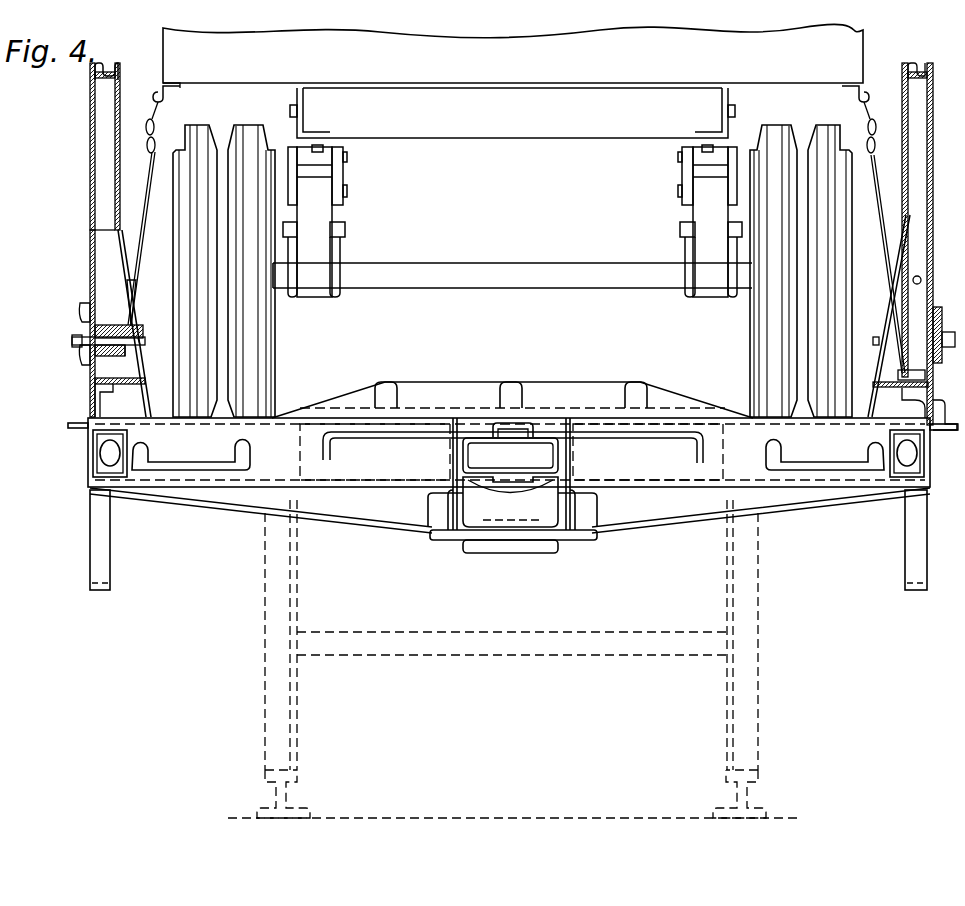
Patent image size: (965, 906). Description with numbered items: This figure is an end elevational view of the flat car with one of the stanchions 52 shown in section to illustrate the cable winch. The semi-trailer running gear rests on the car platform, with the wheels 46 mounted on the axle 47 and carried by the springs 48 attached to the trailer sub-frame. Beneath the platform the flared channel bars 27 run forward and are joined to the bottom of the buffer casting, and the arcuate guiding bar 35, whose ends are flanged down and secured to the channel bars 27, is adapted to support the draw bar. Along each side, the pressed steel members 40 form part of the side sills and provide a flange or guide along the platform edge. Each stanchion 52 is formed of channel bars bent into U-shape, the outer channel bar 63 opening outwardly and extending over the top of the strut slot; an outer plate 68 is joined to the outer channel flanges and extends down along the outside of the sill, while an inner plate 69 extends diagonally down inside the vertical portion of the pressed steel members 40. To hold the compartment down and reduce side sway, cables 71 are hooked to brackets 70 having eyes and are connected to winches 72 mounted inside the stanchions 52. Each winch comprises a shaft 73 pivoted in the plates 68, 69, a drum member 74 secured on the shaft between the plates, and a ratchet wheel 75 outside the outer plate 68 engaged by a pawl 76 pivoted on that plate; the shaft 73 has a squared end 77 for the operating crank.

The channel bars 27 is at (412, 472).
The arcuate guiding bar 35 is at (436, 436).
The pressed steel members 40 is at (120, 397).
The wheels 46 is at (258, 356).
The axle 47 is at (525, 286).
The springs 48 is at (320, 210).
The stanchions 52 is at (90, 190).
The outer channel bar 63 is at (110, 74).
The outer plate 68 is at (90, 257).
The inner plate 69 is at (146, 395).
The brackets 70 is at (170, 92).
The cables 71 is at (147, 186).
The winches 72 is at (140, 328).
The shaft 73 is at (143, 334).
The drum member 74 is at (135, 322).
The ratchet wheel 75 is at (84, 358).
The pawl 76 is at (80, 306).
The squared end 77 is at (72, 341).